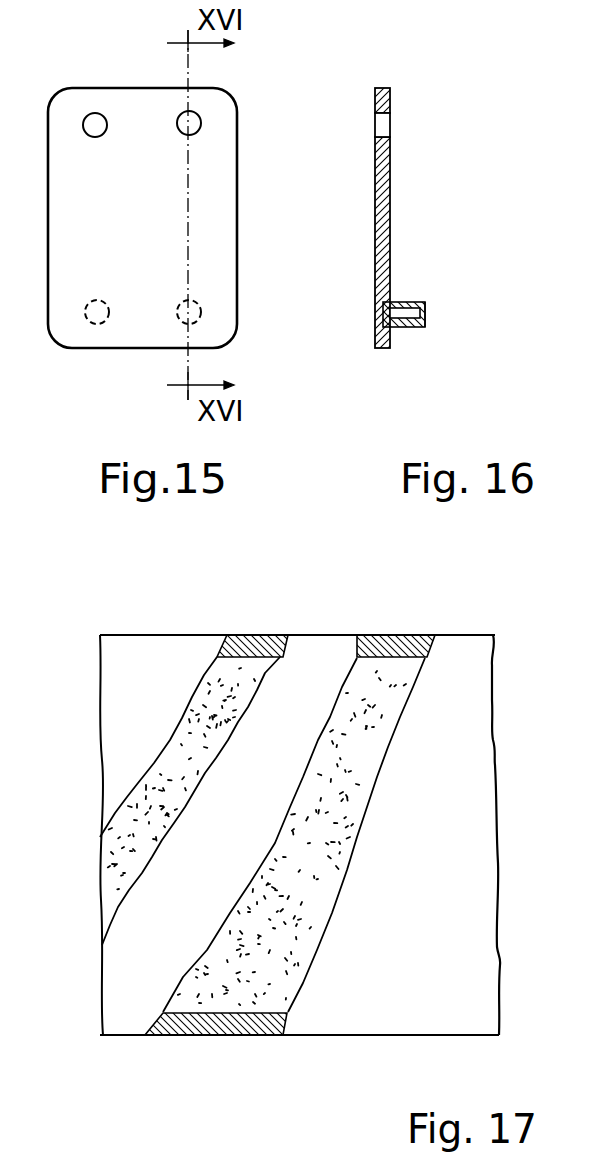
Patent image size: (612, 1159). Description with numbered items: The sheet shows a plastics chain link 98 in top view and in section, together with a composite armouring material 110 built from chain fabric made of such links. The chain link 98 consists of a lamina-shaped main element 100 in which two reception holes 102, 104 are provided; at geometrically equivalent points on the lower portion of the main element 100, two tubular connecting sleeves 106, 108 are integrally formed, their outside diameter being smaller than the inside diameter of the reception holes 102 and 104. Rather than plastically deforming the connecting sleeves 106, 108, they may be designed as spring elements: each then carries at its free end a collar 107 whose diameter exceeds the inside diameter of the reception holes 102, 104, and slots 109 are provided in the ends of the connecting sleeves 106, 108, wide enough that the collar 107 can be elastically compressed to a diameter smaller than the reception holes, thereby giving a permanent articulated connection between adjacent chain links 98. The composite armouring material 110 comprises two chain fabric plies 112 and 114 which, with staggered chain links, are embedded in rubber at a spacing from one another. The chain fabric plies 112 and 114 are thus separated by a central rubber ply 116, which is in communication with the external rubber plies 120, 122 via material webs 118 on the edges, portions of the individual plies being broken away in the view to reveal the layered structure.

In FIG. 15, the chain link 98 is at (250, 140).
In FIG. 16, the chain link 98 is at (352, 146).
In FIG. 15, the main element 100 is at (215, 242).
In FIG. 16, the main element 100 is at (375, 239).
In FIG. 15, the reception hole 102 is at (92, 117).
In FIG. 15, the reception hole 104 is at (185, 134).
In FIG. 16, the reception hole 104 is at (433, 134).
In FIG. 15, the connecting sleeve 106 is at (97, 303).
In FIG. 16, the collar 107 is at (420, 330).
In FIG. 15, the connecting sleeve 108 is at (186, 306).
In FIG. 16, the connecting sleeve 108 is at (405, 302).
In FIG. 16, the slot 109 is at (422, 314).
In FIG. 17, the composite armouring material 110 is at (338, 612).
In FIG. 17, the chain fabric ply 112 is at (238, 683).
In FIG. 17, the chain fabric ply 114 is at (402, 677).
In FIG. 17, the central rubber ply 116 is at (243, 861).
In FIG. 17, the material web 118 is at (218, 1028).
In FIG. 17, the external rubber ply 120 is at (152, 657).
In FIG. 17, the external rubber ply 122 is at (360, 997).